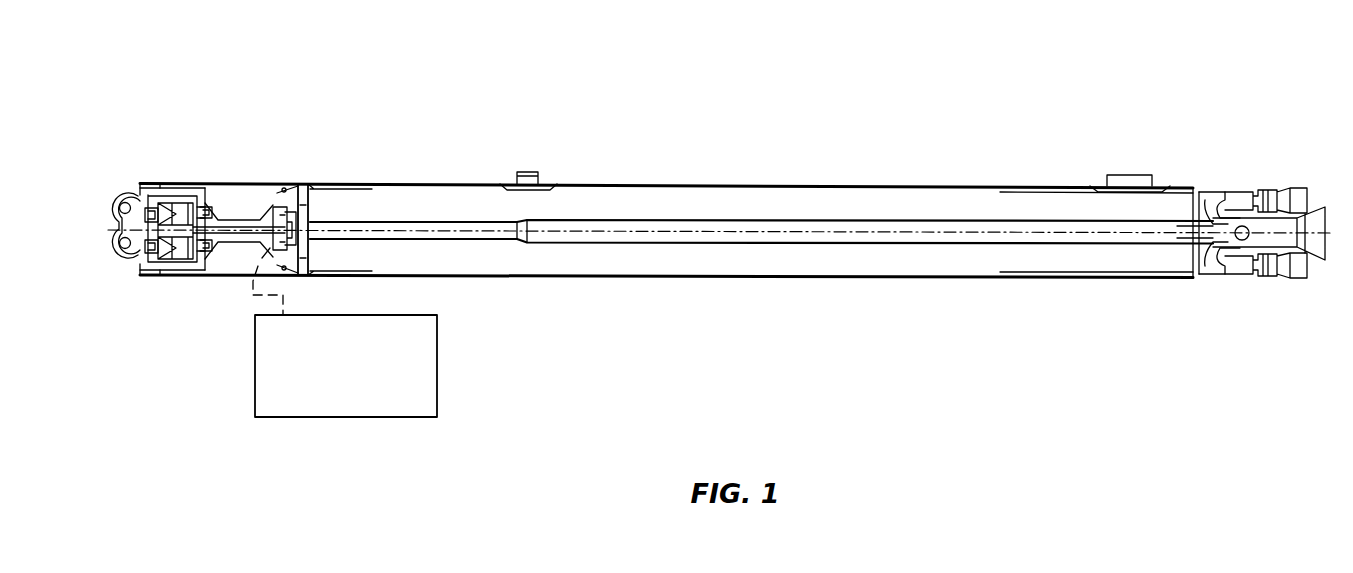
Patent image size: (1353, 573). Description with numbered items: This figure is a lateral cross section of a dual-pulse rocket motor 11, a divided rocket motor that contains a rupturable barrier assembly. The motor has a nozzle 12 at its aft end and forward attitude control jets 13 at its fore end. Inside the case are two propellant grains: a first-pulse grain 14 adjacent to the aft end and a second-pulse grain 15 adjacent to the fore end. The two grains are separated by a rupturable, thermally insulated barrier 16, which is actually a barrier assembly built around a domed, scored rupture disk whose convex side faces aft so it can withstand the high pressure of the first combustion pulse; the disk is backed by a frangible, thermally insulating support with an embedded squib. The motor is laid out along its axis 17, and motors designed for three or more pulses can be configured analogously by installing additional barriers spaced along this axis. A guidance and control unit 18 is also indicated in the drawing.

The dual-pulse rocket motor 11 is at (737, 106).
The nozzle 12 is at (1318, 208).
The forward attitude control jets 13 is at (125, 188).
The first-pulse grain 14 is at (797, 200).
The second-pulse grain 15 is at (243, 198).
The rupturable, thermally insulated barrier 16 is at (312, 212).
The axis 17 is at (578, 230).
The guidance and control unit 18 is at (320, 417).